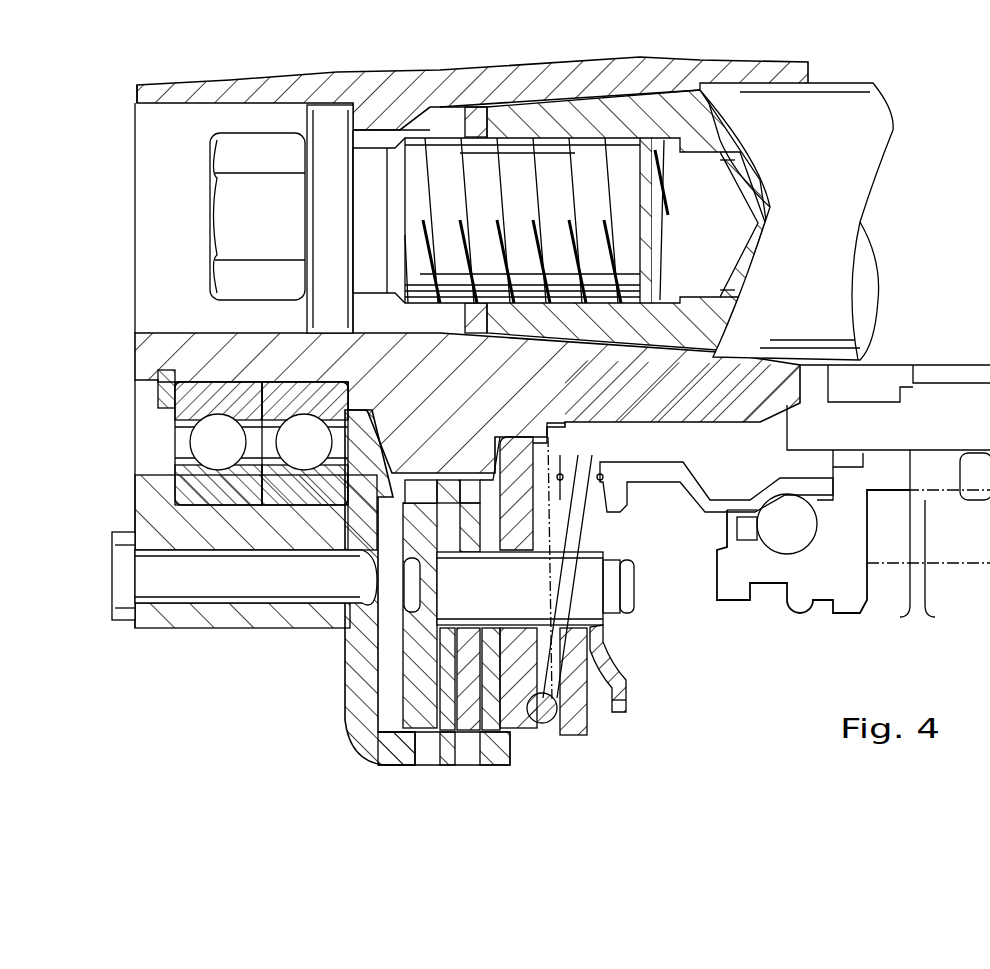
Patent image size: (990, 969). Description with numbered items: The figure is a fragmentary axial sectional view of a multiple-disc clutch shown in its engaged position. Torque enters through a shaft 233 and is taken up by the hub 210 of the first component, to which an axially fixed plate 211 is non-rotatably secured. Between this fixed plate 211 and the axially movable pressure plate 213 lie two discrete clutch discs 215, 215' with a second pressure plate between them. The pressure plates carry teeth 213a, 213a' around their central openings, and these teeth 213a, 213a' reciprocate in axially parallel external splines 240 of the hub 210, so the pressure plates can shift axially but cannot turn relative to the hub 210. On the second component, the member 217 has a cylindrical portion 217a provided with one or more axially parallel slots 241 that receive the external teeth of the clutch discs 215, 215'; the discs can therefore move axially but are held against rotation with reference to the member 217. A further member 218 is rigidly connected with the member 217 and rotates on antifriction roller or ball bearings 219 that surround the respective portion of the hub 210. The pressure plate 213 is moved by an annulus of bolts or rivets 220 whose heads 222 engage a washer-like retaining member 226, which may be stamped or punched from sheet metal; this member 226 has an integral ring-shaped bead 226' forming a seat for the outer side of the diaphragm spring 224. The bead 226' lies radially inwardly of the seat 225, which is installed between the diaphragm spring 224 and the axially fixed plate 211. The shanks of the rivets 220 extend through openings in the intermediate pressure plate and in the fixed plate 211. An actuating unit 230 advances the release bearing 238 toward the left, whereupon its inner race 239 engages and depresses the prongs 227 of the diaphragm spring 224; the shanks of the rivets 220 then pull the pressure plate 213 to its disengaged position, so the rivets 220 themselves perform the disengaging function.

The hub 210 is at (143, 338).
The axially fixed plate 211 is at (520, 452).
The pressure plate 213 is at (378, 560).
The teeth 213a is at (418, 443).
The teeth 213a' is at (467, 479).
The clutch disc 215 is at (395, 683).
The clutch disc 215' is at (573, 699).
The member 217 is at (350, 690).
The cylindrical portion 217a is at (388, 758).
The member 218 is at (143, 515).
The antifriction roller or ball bearings 219 is at (170, 437).
The bolts or rivets 220 is at (600, 598).
The heads 222 is at (634, 575).
The diaphragm spring 224 is at (556, 712).
The seat 225 is at (587, 710).
The washer-like retaining member 226 is at (656, 668).
The ring-shaped bead 226' is at (667, 708).
The prongs 227 is at (618, 462).
The actuating unit 230 is at (870, 605).
The shaft 233 is at (876, 148).
The release bearing 238 is at (795, 505).
The inner race 239 is at (693, 475).
The external splines 240 is at (448, 492).
The slots 241 is at (473, 752).